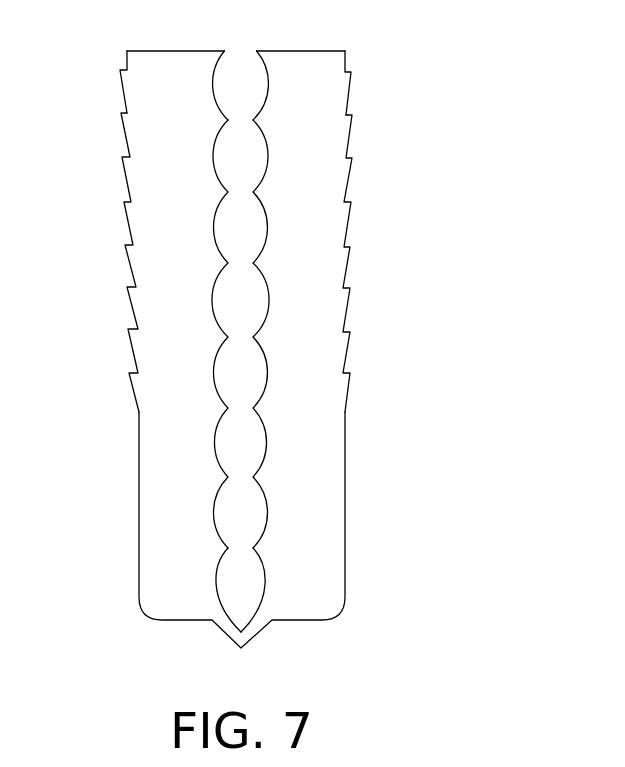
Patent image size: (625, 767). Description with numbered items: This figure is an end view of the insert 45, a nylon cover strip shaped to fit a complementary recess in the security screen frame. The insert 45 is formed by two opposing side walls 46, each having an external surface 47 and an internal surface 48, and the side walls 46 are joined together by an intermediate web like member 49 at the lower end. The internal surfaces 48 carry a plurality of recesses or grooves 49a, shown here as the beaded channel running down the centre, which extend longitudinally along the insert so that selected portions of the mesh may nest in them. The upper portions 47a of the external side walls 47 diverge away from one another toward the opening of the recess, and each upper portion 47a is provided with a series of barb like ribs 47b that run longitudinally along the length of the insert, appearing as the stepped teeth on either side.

The insert 45 is at (85, 284).
The side walls 46 is at (347, 225).
The external surfaces 47 is at (123, 175).
The upper portions 47a is at (122, 93).
The barb like ribs 47b is at (350, 92).
The internal surfaces 48 is at (211, 375).
The intermediate web like member 49 is at (228, 631).
The recesses or grooves 49a is at (213, 160).